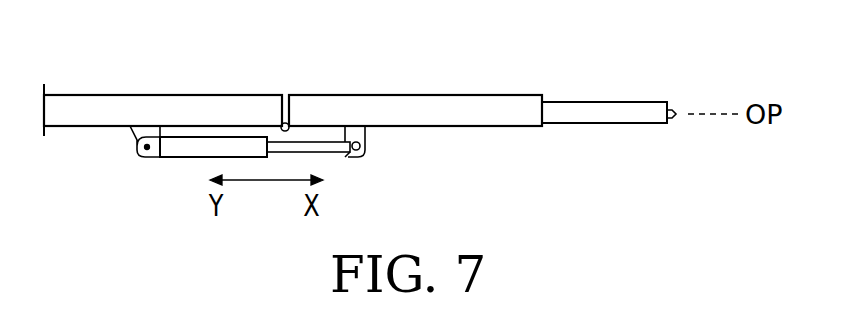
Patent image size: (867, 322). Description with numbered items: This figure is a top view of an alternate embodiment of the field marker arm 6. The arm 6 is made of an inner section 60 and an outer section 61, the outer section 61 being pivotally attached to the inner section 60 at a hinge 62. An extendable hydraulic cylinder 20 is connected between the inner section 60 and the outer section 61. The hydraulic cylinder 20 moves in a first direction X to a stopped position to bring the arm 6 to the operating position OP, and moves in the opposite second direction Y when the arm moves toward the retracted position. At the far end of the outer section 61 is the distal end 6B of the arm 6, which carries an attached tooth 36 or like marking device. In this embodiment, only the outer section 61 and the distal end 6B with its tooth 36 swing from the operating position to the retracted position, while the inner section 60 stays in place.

The marker arm 6 is at (95, 95).
The inner section 60 is at (200, 95).
The outer section 61 is at (383, 95).
The hinge 62 is at (289, 130).
The distal end 6B is at (653, 123).
The tooth 36 is at (672, 108).
The hydraulic cylinder 20 is at (188, 158).